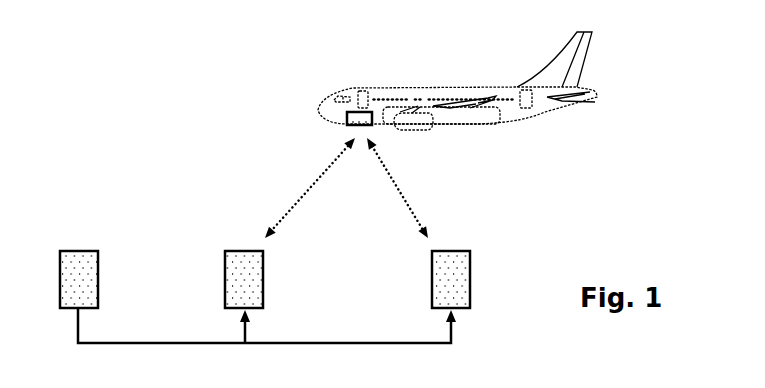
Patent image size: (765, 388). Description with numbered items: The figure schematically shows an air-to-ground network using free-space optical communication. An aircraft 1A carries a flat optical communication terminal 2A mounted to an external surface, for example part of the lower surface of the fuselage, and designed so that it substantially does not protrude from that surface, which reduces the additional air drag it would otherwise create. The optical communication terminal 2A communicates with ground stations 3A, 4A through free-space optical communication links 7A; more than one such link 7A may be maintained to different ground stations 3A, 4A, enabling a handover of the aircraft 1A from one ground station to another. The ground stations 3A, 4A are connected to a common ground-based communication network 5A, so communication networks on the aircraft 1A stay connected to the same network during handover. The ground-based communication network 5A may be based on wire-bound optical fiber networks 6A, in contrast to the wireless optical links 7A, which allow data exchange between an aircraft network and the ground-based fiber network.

The aircraft 1A is at (380, 68).
The optical communication terminal 2A is at (347, 124).
The ground station 3A is at (248, 250).
The ground station 4A is at (457, 250).
The ground-based communication network 5A is at (82, 250).
The optical fiber network 6A is at (168, 342).
The free-space optical communication link 7A is at (310, 188).